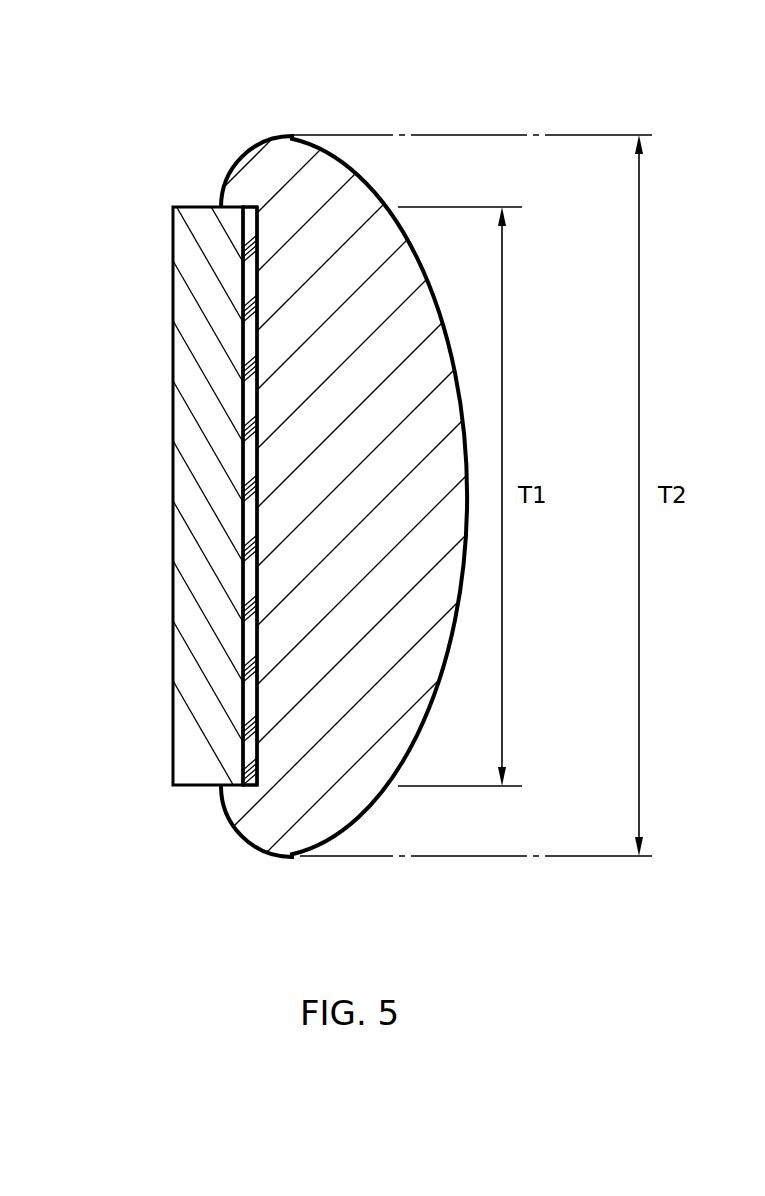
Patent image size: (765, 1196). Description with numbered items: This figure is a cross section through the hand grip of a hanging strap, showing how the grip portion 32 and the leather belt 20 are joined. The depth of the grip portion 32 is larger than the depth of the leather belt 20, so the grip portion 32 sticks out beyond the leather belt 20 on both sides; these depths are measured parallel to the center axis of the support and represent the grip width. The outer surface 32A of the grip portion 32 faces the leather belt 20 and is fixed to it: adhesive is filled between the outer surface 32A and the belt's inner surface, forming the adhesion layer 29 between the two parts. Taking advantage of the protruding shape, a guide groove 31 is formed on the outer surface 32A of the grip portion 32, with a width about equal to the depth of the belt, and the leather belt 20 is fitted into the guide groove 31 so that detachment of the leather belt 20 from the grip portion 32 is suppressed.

The grip portion 32 is at (257, 183).
The leather belt 20 is at (193, 278).
The adhesion layer 29 is at (250, 402).
The guide groove 31 is at (233, 522).
The outer surface of the grip portion 32A is at (250, 640).